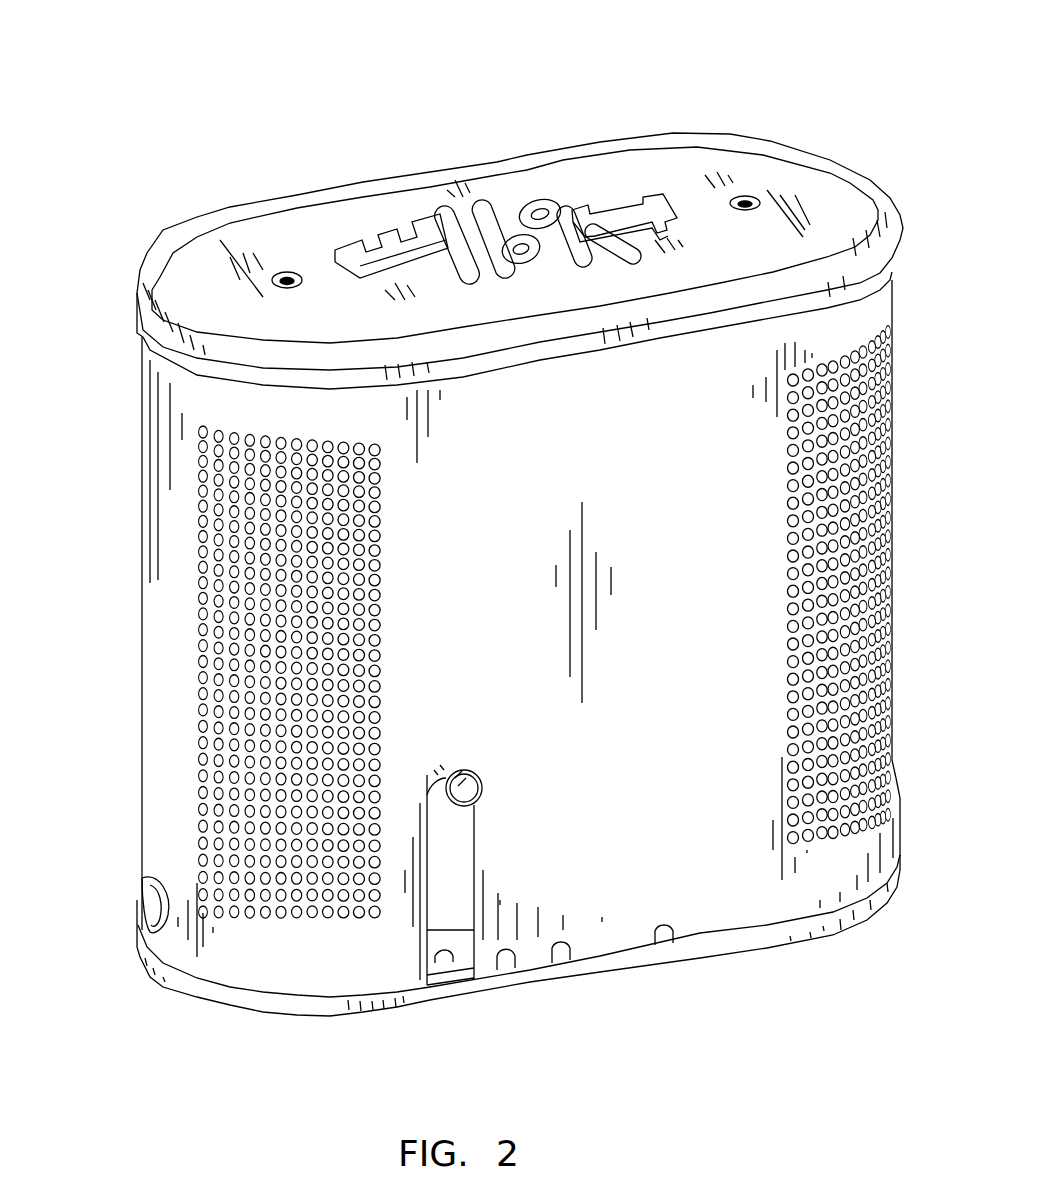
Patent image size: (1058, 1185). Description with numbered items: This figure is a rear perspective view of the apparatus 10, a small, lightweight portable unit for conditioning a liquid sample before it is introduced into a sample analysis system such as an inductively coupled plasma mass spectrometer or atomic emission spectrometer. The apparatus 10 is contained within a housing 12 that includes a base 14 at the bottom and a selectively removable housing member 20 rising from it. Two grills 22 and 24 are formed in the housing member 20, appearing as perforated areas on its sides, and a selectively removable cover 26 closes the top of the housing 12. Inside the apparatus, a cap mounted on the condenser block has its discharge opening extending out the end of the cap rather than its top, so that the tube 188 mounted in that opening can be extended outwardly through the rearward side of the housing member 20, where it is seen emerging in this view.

The apparatus 10 is at (755, 106).
The housing 12 is at (141, 671).
The base 14 is at (413, 1003).
The housing member 20 is at (667, 786).
The grill 22 is at (380, 645).
The grill 24 is at (830, 540).
The cover 26 is at (783, 165).
The tube 188 is at (462, 752).